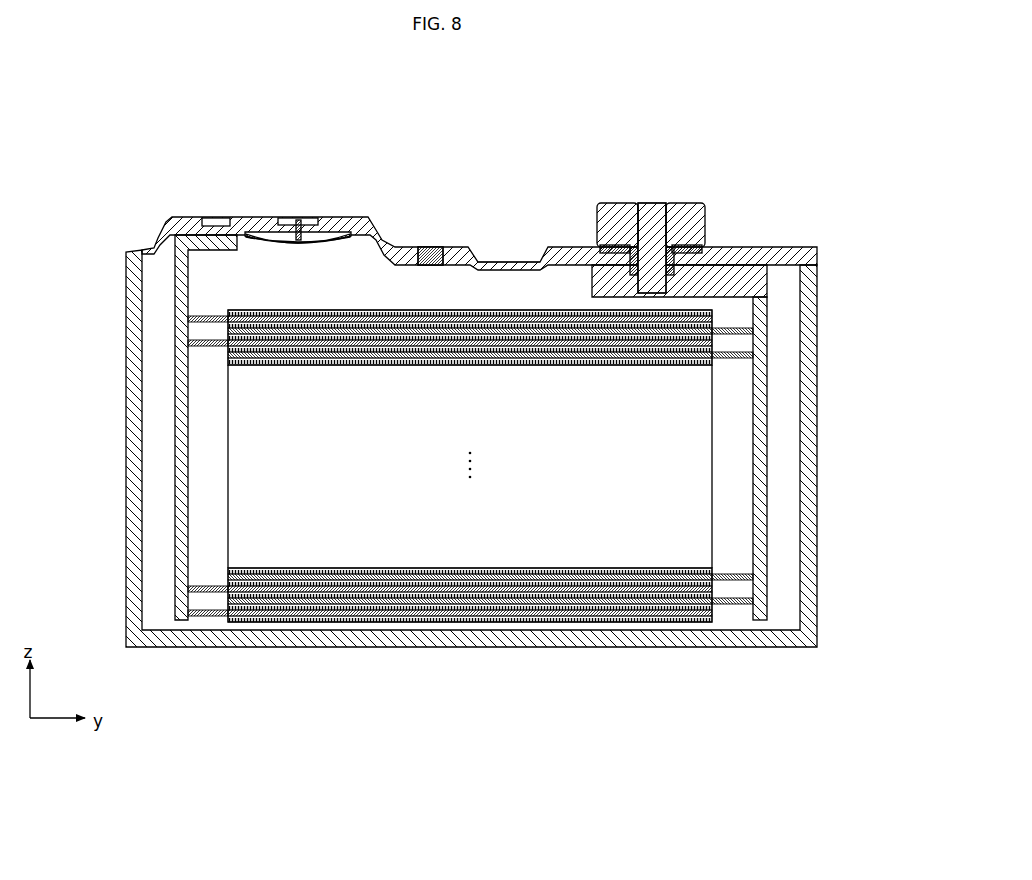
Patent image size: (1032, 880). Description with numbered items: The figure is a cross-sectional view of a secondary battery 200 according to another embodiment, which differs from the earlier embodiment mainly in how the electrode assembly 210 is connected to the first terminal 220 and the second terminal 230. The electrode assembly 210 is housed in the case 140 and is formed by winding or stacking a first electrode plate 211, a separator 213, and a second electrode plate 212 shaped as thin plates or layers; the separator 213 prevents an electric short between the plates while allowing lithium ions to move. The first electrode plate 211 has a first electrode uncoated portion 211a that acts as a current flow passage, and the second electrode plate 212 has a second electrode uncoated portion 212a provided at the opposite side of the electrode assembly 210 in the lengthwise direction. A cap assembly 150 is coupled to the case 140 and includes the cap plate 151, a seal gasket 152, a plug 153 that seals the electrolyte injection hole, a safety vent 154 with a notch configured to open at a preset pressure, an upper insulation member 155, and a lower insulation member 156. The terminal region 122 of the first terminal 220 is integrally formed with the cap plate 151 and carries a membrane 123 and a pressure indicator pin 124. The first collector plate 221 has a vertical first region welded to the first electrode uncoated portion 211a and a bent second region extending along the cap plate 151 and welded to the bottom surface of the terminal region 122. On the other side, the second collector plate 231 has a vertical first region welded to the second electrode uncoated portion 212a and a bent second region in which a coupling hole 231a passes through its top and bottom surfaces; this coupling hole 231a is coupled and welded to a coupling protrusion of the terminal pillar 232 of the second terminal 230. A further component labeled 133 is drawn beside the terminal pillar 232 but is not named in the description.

The secondary battery 200 is at (880, 124).
The first terminal 220 is at (333, 151).
The first collector plate 221 is at (188, 245).
The terminal region 122 is at (242, 240).
The pressure indicator pin 124 is at (290, 240).
The membrane 123 is at (312, 232).
The cap assembly 150 is at (660, 151).
The plug 153 is at (430, 250).
The safety vent 154 is at (487, 266).
The cap plate 151 is at (545, 257).
The lower insulation member 156 is at (577, 265).
The upper insulation member 155 is at (586, 250).
The seal gasket 152 is at (652, 215).
The second terminal 230 is at (683, 151).
The terminal pillar 232 is at (598, 280).
The terminal plate 133 is at (700, 223).
The second collector plate 231 is at (765, 310).
The coupling hole 231a is at (648, 362).
The case 140 is at (805, 490).
The first electrode uncoated portion 211a is at (205, 620).
The first electrode plate 211 is at (343, 612).
The separator 213 is at (490, 622).
The electrode assembly 210 is at (563, 625).
The second electrode plate 212 is at (635, 612).
The second electrode uncoated portion 212a is at (737, 620).